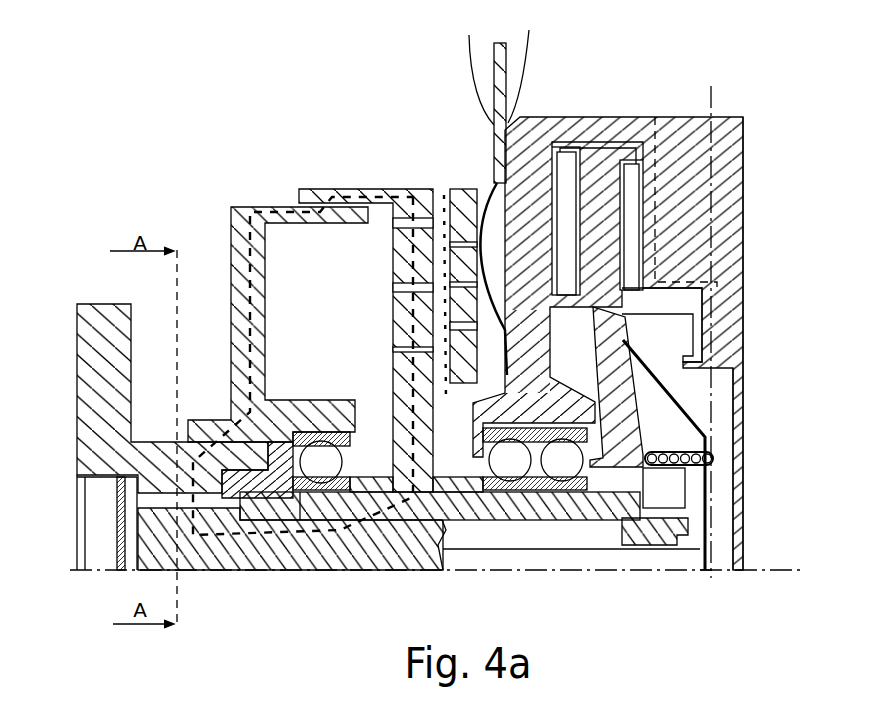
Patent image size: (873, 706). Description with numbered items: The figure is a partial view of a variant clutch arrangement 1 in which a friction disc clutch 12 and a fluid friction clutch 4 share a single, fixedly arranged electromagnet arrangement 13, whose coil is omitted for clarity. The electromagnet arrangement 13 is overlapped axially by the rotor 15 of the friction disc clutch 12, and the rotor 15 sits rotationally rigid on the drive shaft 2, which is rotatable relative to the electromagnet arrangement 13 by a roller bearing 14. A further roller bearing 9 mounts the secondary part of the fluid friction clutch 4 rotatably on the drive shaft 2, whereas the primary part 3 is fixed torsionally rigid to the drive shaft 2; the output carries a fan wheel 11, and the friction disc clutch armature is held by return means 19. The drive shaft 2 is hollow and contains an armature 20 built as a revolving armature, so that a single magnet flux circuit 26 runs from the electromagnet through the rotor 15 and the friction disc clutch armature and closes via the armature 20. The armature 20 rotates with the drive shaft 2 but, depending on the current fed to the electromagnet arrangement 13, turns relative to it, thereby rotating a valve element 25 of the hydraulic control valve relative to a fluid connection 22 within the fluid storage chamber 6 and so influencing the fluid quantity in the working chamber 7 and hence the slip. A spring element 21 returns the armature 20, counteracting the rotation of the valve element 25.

The clutch arrangement 1 is at (411, 582).
The drive shaft 2 is at (92, 458).
The primary part 3 is at (620, 407).
The fluid friction clutch 4 is at (717, 584).
The fluid storage chamber 6 is at (723, 525).
The working chamber 7 is at (622, 222).
The bearing 9 is at (510, 458).
The fan wheel 11 is at (502, 63).
The friction disc clutch 12 is at (472, 166).
The electromagnet arrangement 13 is at (242, 207).
The bearing 14 is at (322, 460).
The rotor 15 is at (312, 189).
The return means 19 is at (593, 118).
The armature 20 is at (233, 558).
The spring element 21 is at (703, 463).
The fluid connection 22 is at (628, 310).
The valve element 25 is at (690, 417).
The magnet flux circuit 26 is at (210, 410).